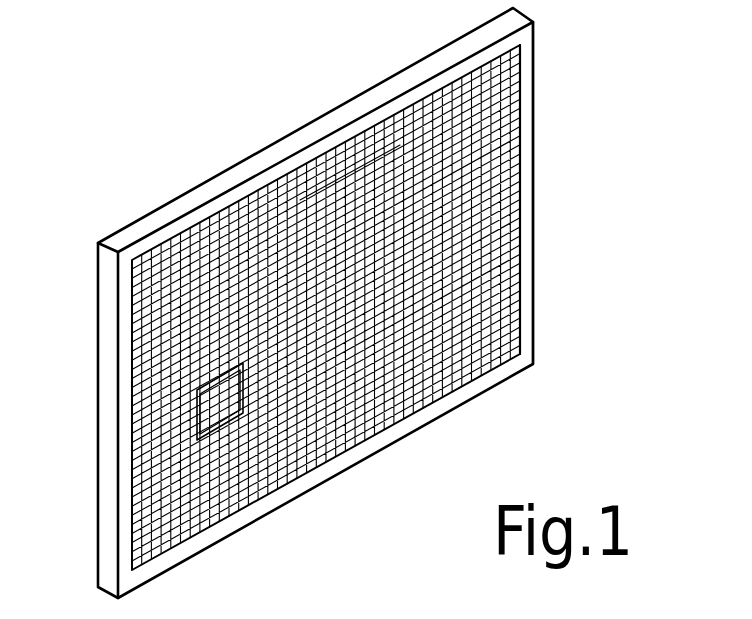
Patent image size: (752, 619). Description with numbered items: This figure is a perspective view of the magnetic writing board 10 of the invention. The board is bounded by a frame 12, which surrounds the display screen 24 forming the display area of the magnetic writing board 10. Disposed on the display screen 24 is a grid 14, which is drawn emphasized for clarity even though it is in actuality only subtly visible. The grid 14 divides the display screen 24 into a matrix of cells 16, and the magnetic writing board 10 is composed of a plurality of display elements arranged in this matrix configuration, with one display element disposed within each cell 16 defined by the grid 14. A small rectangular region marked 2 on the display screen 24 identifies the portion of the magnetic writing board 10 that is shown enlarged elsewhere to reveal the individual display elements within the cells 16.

The magnetic writing board 10 is at (640, 133).
The frame 12 is at (256, 164).
The grid 14 is at (518, 92).
The cell 16 is at (453, 108).
The display screen 24 is at (495, 291).
The portion of the magnetic writing board 2 is at (197, 415).